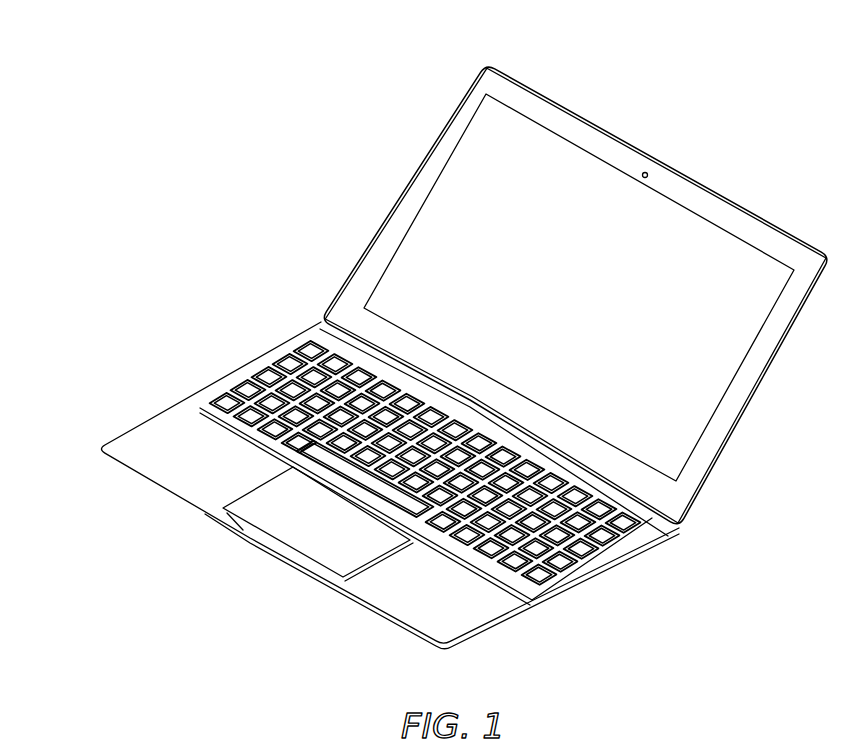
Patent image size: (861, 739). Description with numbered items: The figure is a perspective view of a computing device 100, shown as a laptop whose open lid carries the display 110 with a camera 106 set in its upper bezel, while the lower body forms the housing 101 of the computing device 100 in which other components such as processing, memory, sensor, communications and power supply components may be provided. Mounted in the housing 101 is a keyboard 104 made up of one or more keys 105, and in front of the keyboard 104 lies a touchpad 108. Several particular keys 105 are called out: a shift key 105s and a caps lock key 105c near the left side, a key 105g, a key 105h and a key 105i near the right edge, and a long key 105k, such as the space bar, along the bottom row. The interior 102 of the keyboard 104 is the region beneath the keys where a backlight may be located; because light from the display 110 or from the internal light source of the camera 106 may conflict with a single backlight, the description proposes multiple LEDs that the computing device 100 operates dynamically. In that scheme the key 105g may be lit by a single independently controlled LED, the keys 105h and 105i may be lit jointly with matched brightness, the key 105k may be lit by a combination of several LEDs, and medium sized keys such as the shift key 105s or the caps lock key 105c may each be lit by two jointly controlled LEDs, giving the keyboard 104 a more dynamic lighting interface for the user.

The computing device 100 is at (147, 92).
The housing 101 is at (473, 610).
The interior of keyboard 102 is at (122, 738).
The keyboard 104 is at (247, 347).
The keys 105 is at (428, 471).
The caps lock key 105c is at (211, 338).
The shift key 105s is at (162, 365).
The key 105g is at (627, 533).
The key 105h is at (615, 540).
The key 105i is at (602, 553).
The key 105k is at (380, 492).
The camera 106 is at (645, 173).
The touchpad 108 is at (223, 508).
The display 110 is at (428, 183).